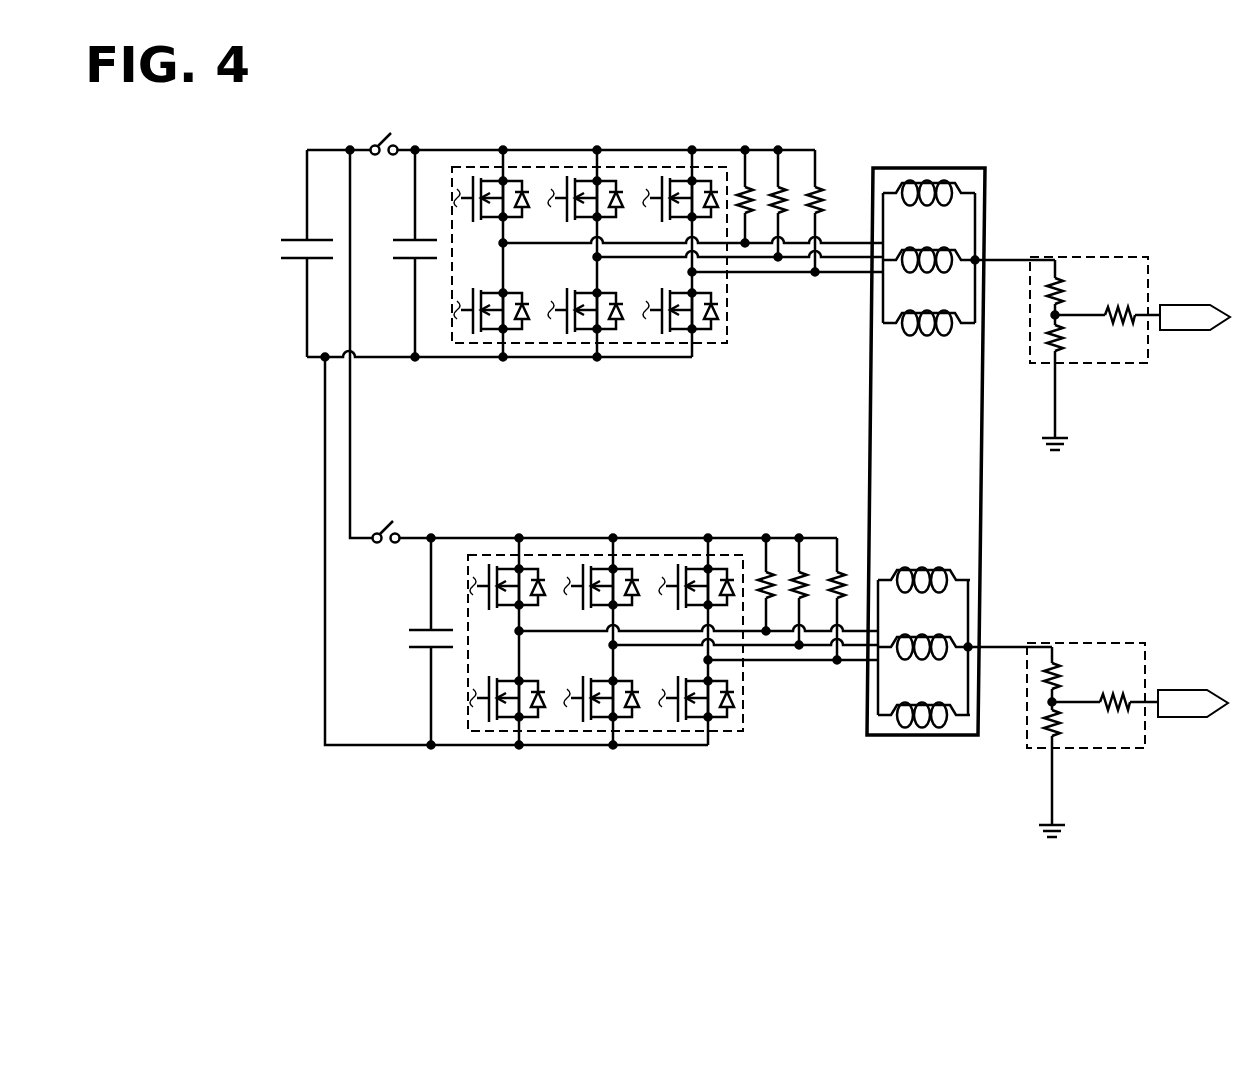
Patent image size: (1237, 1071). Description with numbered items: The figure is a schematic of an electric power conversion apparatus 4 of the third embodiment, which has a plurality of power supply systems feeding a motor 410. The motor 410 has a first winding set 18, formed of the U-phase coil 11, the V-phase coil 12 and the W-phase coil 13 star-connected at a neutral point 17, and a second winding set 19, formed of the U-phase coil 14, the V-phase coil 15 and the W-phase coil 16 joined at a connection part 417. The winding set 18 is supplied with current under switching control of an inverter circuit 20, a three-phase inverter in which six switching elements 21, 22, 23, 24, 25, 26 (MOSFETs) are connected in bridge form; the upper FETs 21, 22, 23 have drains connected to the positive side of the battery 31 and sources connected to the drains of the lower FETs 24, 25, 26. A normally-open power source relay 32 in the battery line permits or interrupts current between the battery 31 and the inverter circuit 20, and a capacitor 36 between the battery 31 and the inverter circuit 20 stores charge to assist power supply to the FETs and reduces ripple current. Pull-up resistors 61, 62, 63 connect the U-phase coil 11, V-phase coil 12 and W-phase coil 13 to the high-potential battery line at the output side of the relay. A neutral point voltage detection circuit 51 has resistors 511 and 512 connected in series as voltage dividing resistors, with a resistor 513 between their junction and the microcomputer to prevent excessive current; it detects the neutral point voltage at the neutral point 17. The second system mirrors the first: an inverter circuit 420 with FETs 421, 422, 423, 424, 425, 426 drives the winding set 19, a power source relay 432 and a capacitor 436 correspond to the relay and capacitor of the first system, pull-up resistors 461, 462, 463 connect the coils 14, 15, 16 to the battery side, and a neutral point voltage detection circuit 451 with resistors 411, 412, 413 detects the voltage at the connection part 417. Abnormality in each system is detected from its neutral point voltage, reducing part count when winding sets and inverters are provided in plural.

The electric power conversion apparatus 4 is at (373, 780).
The U-phase coil 11 is at (953, 184).
The V-phase coil 12 is at (947, 253).
The W-phase coil 13 is at (953, 315).
The U-phase coil 14 is at (953, 571).
The V-phase coil 15 is at (947, 640).
The W-phase coil 16 is at (953, 702).
The neutral point 17 is at (980, 258).
The winding set 18 is at (969, 306).
The winding set 19 is at (965, 692).
The inverter circuit 20 is at (594, 261).
The switching element 21 is at (489, 220).
The switching element 22 is at (593, 221).
The switching element 23 is at (688, 221).
The switching element 24 is at (493, 341).
The switching element 25 is at (588, 341).
The switching element 26 is at (683, 341).
The battery 31 is at (293, 238).
The power source relay 32 is at (376, 142).
The capacitor 36 is at (413, 236).
The neutral point voltage detection circuit 51 is at (1130, 325).
The pull-up resistor 61 is at (748, 186).
The pull-up resistor 62 is at (781, 186).
The pull-up resistor 63 is at (818, 186).
The motor 410 is at (961, 499).
The resistor 411 is at (1055, 663).
The resistor 412 is at (1055, 738).
The resistor 413 is at (1115, 712).
The connection part 417 is at (975, 646).
The inverter circuit 420 is at (605, 642).
The FET 421 is at (505, 608).
The FET 422 is at (609, 609).
The FET 423 is at (704, 609).
The FET 424 is at (509, 729).
The FET 425 is at (604, 729).
The FET 426 is at (699, 729).
The power source relay 432 is at (378, 532).
The capacitor 436 is at (418, 628).
The neutral point voltage detection circuit 451 is at (1127, 715).
The pull-up resistor 461 is at (768, 571).
The pull-up resistor 462 is at (801, 571).
The pull-up resistor 463 is at (838, 571).
The resistor 511 is at (1058, 278).
The resistor 512 is at (1058, 352).
The resistor 513 is at (1120, 325).